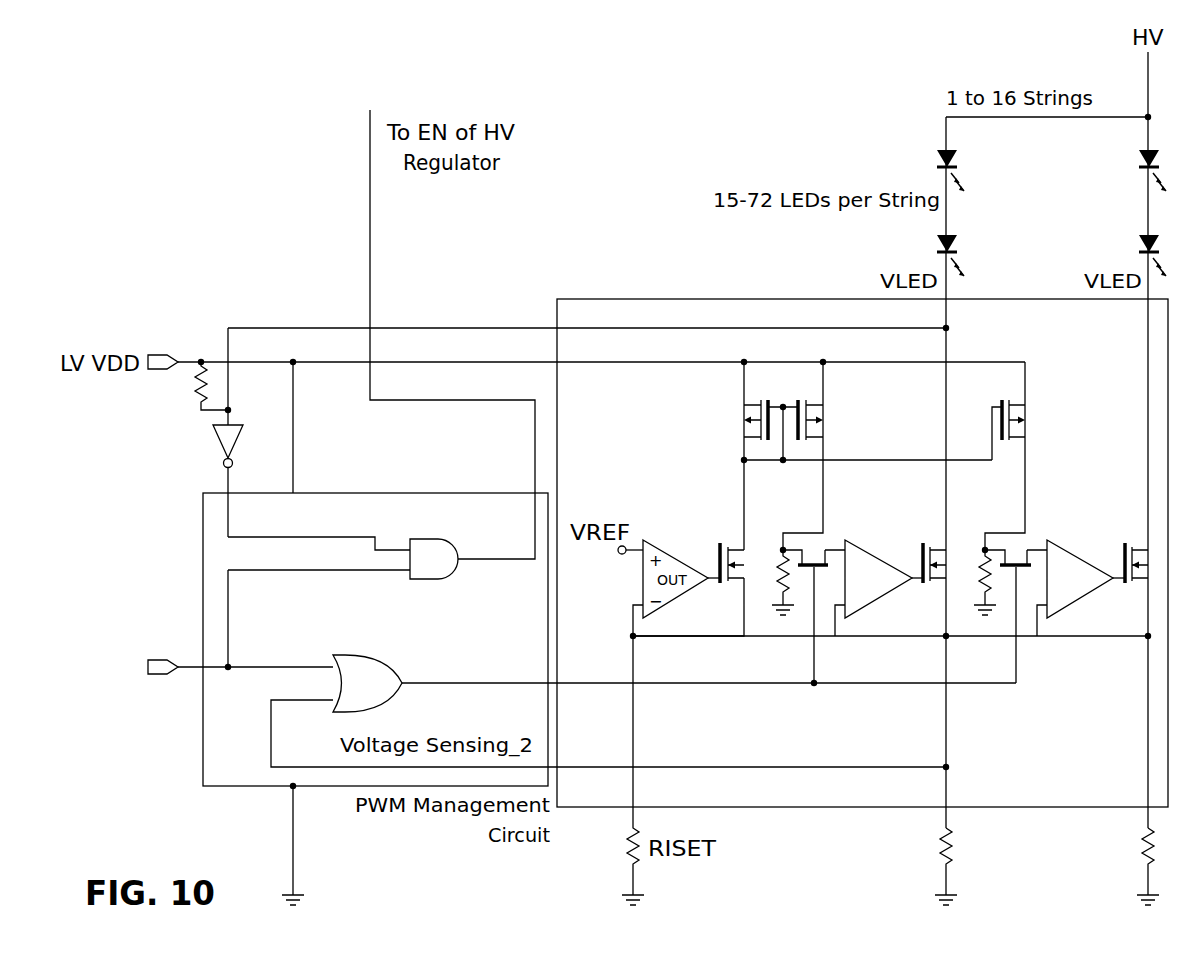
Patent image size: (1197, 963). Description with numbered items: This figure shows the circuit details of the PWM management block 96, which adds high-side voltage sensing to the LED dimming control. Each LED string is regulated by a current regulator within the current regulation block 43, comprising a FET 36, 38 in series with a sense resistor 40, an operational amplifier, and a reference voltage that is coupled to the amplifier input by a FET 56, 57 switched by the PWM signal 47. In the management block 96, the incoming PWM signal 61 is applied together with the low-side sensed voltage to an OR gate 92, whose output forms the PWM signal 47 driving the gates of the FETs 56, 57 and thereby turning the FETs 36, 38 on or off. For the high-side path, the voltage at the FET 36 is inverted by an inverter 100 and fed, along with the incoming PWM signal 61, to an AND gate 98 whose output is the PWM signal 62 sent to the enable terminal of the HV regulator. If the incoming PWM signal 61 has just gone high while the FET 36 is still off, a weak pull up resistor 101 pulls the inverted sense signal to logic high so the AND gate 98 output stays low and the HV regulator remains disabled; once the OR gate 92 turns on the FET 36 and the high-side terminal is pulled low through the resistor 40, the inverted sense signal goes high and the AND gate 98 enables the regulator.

The FET 36 is at (935, 543).
The FET 38 is at (1137, 545).
The resistor 40 is at (935, 851).
The current regulation block 43 is at (842, 298).
The PWM signal 47 is at (742, 685).
The FET 56 is at (824, 572).
The FET 57 is at (1014, 555).
The incoming PWM signal 61 is at (157, 660).
The PWM signal 62 is at (371, 278).
The OR gate 92 is at (353, 656).
The PWM management block 96 is at (418, 493).
The AND gate 98 is at (460, 576).
The inverter 100 is at (212, 440).
The weak pull up resistor 101 is at (196, 391).